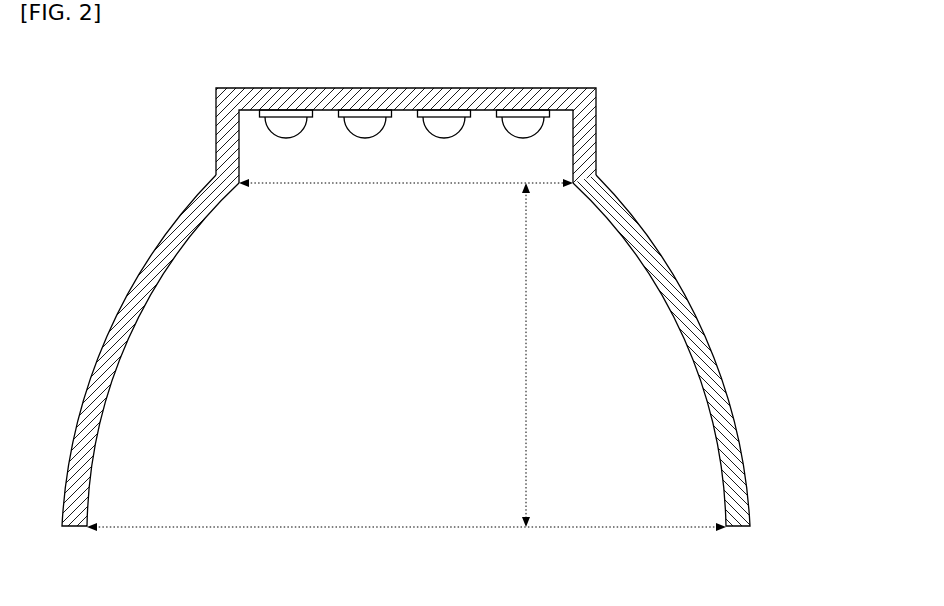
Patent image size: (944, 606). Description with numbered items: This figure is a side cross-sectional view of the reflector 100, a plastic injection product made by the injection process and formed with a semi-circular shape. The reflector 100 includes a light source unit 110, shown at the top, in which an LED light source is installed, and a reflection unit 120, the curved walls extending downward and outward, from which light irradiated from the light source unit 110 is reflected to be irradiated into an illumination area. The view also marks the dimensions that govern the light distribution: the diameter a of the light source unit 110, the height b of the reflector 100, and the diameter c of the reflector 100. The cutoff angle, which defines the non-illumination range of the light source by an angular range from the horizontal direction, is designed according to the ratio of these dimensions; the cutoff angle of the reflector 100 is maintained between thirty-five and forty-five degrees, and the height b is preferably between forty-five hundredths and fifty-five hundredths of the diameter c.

The reflector 100 is at (459, 320).
The light source unit 110 is at (597, 138).
The reflection unit 120 is at (737, 422).